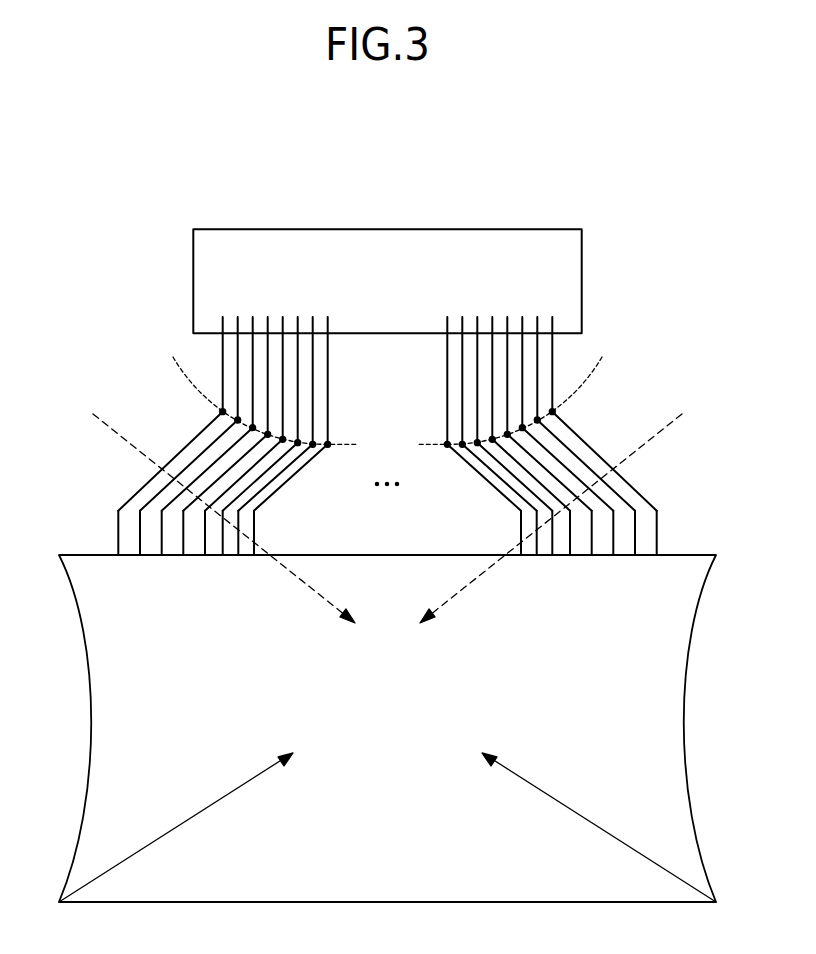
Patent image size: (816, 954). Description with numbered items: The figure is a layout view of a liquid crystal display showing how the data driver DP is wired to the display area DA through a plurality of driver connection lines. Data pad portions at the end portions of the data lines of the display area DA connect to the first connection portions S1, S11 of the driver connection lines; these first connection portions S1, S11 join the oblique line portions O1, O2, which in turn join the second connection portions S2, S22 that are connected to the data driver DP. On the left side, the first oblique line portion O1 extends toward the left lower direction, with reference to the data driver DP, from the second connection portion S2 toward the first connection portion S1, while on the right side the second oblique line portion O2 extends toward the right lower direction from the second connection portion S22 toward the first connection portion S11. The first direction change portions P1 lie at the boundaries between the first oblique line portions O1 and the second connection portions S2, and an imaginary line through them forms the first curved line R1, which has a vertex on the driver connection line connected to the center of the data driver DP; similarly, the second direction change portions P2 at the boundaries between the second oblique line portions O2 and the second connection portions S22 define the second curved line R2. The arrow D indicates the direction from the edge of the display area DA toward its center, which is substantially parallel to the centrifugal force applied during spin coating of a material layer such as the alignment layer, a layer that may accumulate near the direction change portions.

The data driver DP is at (566, 266).
The display area DA is at (387, 728).
The second connection portion S2 is at (217, 410).
The second connection portion S22 is at (558, 410).
The first oblique line portion O1 is at (214, 404).
The second oblique line portion O2 is at (561, 404).
The first connection portion S1 is at (112, 511).
The first connection portion S11 is at (663, 511).
The first direction change portion P1 is at (330, 442).
The second direction change portion P2 is at (555, 411).
The first curved line R1 is at (182, 366).
The second curved line R2 is at (595, 364).
The arrow D is at (387, 761).